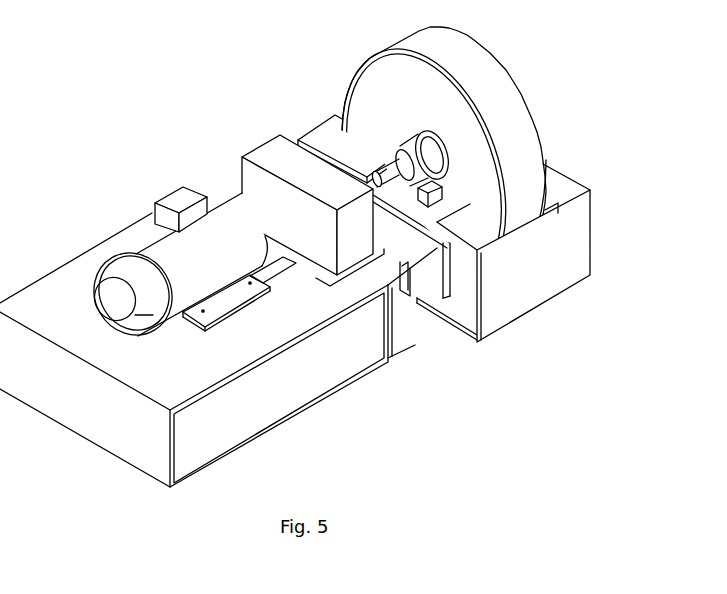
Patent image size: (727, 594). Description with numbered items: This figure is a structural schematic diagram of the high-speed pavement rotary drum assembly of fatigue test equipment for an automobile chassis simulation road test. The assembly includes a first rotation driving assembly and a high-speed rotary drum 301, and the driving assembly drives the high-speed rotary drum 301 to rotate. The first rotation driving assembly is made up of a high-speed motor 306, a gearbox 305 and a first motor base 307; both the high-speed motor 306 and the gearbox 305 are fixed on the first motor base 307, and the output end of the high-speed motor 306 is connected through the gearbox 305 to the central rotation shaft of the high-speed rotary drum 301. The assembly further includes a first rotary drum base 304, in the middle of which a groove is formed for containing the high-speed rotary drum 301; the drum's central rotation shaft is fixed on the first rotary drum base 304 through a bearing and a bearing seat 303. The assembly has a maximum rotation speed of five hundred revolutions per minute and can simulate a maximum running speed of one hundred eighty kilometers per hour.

The high-speed rotary drum 301 is at (402, 163).
The bearing seat 303 is at (277, 124).
The first rotary drum base 304 is at (531, 306).
The gearbox 305 is at (269, 190).
The high-speed motor 306 is at (187, 242).
The first motor base 307 is at (268, 340).